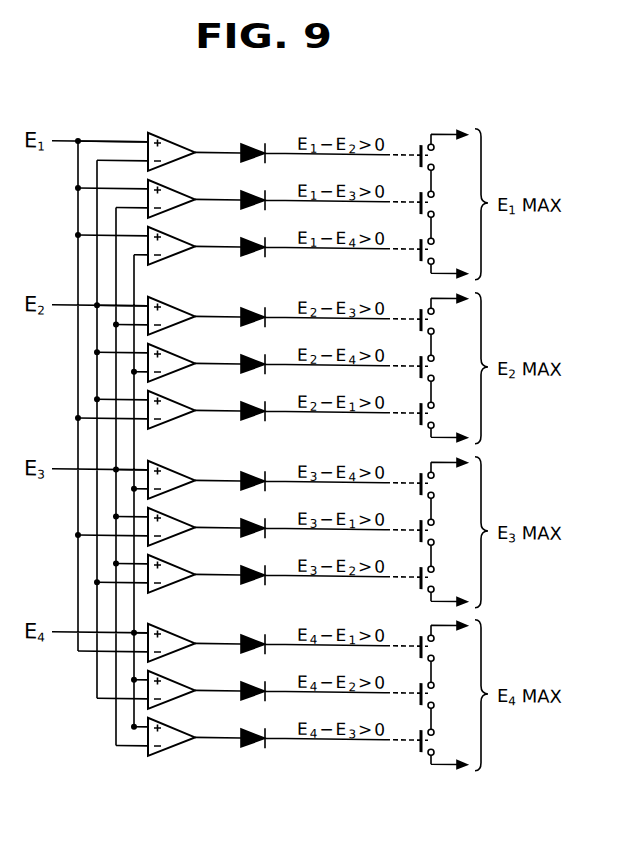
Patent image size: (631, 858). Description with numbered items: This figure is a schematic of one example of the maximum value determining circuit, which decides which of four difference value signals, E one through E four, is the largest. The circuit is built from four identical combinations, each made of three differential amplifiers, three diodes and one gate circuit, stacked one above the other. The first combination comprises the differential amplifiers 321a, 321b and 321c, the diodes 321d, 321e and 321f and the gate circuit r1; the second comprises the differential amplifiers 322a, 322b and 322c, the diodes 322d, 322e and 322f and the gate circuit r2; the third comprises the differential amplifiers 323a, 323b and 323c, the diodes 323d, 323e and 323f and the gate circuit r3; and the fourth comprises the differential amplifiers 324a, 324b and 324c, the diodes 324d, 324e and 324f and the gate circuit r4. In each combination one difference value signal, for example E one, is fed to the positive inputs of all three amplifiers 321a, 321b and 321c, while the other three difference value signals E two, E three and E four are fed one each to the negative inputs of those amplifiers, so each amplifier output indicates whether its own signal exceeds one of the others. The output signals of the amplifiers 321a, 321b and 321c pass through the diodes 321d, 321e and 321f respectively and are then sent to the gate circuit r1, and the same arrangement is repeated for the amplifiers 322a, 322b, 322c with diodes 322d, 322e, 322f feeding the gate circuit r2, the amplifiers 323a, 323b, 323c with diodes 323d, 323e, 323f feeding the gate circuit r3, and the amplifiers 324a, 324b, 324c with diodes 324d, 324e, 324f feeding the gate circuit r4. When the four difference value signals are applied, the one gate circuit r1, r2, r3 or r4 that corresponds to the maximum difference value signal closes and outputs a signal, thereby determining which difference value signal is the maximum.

The differential amplifier 321a is at (172, 127).
The differential amplifier 321b is at (172, 174).
The differential amplifier 321c is at (172, 221).
The diode 321d is at (252, 143).
The diode 321e is at (252, 190).
The diode 321f is at (252, 237).
The differential amplifier 322a is at (172, 291).
The differential amplifier 322b is at (172, 338).
The differential amplifier 322c is at (172, 385).
The diode 322d is at (252, 307).
The diode 322e is at (252, 354).
The diode 322f is at (252, 401).
The differential amplifier 323a is at (172, 455).
The differential amplifier 323b is at (172, 502).
The differential amplifier 323c is at (172, 549).
The diode 323d is at (252, 471).
The diode 323e is at (252, 518).
The diode 323f is at (252, 565).
The differential amplifier 324a is at (172, 618).
The differential amplifier 324b is at (172, 665).
The differential amplifier 324c is at (172, 712).
The diode 324d is at (252, 634).
The diode 324e is at (252, 681).
The diode 324f is at (252, 728).
The gate circuit r1 is at (444, 204).
The gate circuit r2 is at (444, 368).
The gate circuit r3 is at (444, 532).
The gate circuit r4 is at (444, 695).